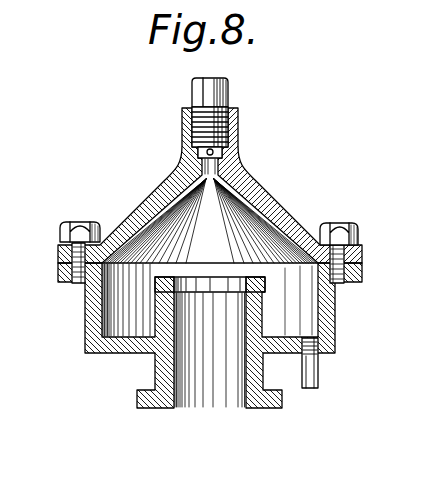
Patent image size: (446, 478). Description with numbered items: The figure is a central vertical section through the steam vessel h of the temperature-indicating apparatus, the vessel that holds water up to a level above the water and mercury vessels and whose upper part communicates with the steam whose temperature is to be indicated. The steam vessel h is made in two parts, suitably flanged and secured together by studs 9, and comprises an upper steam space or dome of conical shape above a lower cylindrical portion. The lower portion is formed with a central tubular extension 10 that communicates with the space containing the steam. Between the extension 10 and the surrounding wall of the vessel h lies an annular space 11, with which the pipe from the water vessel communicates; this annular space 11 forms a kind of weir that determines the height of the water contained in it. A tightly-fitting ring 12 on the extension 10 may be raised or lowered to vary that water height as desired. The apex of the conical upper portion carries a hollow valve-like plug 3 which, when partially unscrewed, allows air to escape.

The hollow valve-like plug 3 is at (229, 123).
The steam vessel h is at (210, 223).
The studs 9 is at (318, 363).
The central tubular extension 10 is at (240, 350).
The annular space 11 is at (133, 300).
The tightly-fitting ring 12 is at (258, 290).